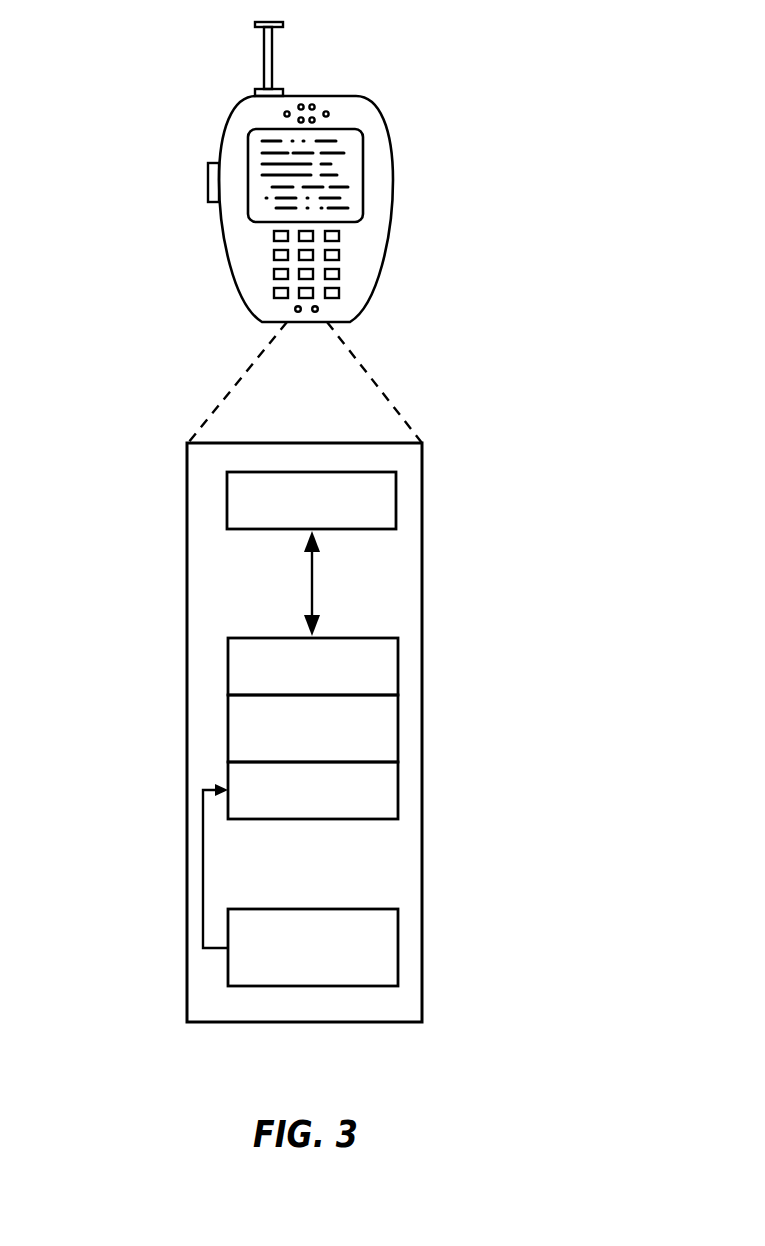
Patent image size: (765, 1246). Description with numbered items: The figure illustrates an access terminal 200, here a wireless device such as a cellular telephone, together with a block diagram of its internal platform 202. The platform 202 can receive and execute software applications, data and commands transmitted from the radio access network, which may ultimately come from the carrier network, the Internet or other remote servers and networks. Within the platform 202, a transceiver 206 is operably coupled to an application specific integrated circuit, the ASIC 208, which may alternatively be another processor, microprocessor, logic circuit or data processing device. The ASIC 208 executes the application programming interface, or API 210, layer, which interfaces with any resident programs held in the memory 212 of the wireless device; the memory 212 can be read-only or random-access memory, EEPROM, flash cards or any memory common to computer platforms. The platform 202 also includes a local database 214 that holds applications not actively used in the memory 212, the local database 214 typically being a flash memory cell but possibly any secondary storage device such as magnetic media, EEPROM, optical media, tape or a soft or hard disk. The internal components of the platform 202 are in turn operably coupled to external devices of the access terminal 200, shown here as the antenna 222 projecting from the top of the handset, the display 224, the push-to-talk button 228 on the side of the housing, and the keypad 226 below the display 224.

The access terminal 200 is at (372, 295).
The platform 202 is at (186, 638).
The transceiver 206 is at (397, 502).
The application specific integrated circuit (ASIC) 208 is at (398, 673).
The application programming interface (API) 210 is at (398, 722).
The memory 212 is at (398, 790).
The local database 214 is at (398, 930).
The antenna 222 is at (281, 37).
The display 224 is at (363, 163).
The keypad 226 is at (340, 255).
The push-to-talk button 228 is at (208, 172).